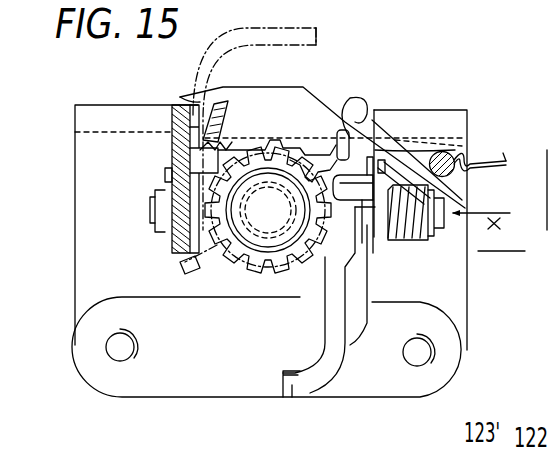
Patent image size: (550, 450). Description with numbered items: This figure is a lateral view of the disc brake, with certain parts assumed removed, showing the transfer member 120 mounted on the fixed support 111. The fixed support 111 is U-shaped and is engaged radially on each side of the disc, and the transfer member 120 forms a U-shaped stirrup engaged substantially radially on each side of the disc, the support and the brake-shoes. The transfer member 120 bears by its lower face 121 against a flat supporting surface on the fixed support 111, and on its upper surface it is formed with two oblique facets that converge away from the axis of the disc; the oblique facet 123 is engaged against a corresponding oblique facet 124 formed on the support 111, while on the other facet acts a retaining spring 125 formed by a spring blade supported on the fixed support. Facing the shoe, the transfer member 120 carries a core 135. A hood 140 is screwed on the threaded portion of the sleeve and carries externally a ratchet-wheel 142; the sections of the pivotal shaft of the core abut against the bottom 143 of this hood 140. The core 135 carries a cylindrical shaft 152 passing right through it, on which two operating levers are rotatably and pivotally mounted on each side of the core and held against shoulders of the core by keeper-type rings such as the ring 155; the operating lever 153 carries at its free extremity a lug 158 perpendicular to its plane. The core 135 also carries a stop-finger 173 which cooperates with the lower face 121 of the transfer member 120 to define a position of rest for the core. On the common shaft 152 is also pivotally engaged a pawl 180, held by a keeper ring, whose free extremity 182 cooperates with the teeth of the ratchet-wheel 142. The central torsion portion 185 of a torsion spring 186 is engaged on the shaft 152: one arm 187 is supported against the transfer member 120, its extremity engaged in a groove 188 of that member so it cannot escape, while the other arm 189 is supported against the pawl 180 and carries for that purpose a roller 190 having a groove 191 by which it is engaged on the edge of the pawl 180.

The fixed support 111 is at (72, 337).
The transfer member 120 is at (290, 77).
The lower face 121 is at (223, 115).
The oblique facet 123 is at (221, 95).
The oblique facet 124 is at (208, 102).
The retaining spring 125 is at (505, 154).
The core 135 is at (203, 252).
The hood 140 is at (252, 254).
The ratchet-wheel 142 is at (298, 275).
The bottom 143 is at (279, 226).
The cylindrical shaft 152 is at (150, 212).
The operating lever 153 is at (172, 244).
The ring 155 is at (180, 175).
The lug 158 is at (287, 34).
The stop-finger 173 is at (225, 150).
The pawl 180 is at (356, 215).
The free extremity 182 is at (412, 207).
The central torsion portion 185 is at (404, 250).
The torsion spring 186 is at (424, 245).
The arm 187 is at (375, 162).
The groove 188 is at (358, 108).
The arm 189 is at (432, 143).
The roller 190 is at (392, 138).
The groove 191 is at (299, 158).